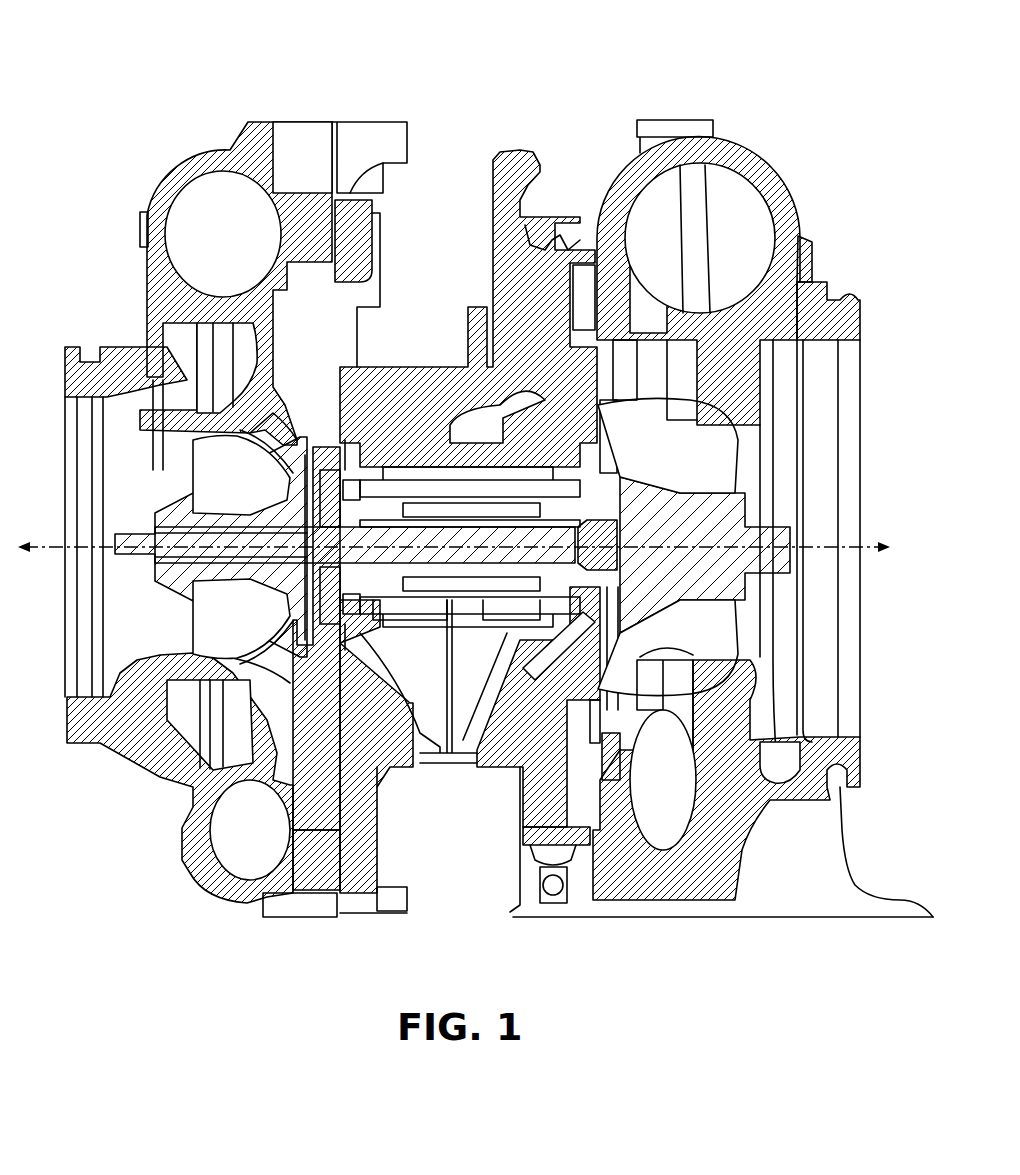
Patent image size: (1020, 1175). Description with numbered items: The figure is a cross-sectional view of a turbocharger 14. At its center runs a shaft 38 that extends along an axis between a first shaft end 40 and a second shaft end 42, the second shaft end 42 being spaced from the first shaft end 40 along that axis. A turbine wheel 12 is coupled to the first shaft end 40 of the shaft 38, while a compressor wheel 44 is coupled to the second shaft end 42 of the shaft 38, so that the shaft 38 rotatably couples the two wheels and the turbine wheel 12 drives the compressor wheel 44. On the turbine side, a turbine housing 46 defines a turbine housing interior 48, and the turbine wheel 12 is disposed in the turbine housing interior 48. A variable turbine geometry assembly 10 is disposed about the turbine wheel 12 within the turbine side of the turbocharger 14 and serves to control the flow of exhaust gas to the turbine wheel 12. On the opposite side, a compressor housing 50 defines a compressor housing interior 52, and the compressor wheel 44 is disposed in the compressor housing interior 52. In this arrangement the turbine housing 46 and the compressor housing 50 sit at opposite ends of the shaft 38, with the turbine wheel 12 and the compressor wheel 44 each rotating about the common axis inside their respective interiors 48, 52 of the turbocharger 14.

The variable turbine geometry assembly 10 is at (763, 518).
The turbine wheel 12 is at (688, 520).
The turbocharger 14 is at (475, 462).
The shaft 38 is at (619, 522).
The first shaft end 40 is at (578, 325).
The second shaft end 42 is at (120, 548).
The compressor wheel 44 is at (235, 508).
The turbine housing 46 is at (795, 290).
The turbine housing interior 48 is at (705, 221).
The compressor housing 50 is at (236, 519).
The compressor housing interior 52 is at (234, 248).